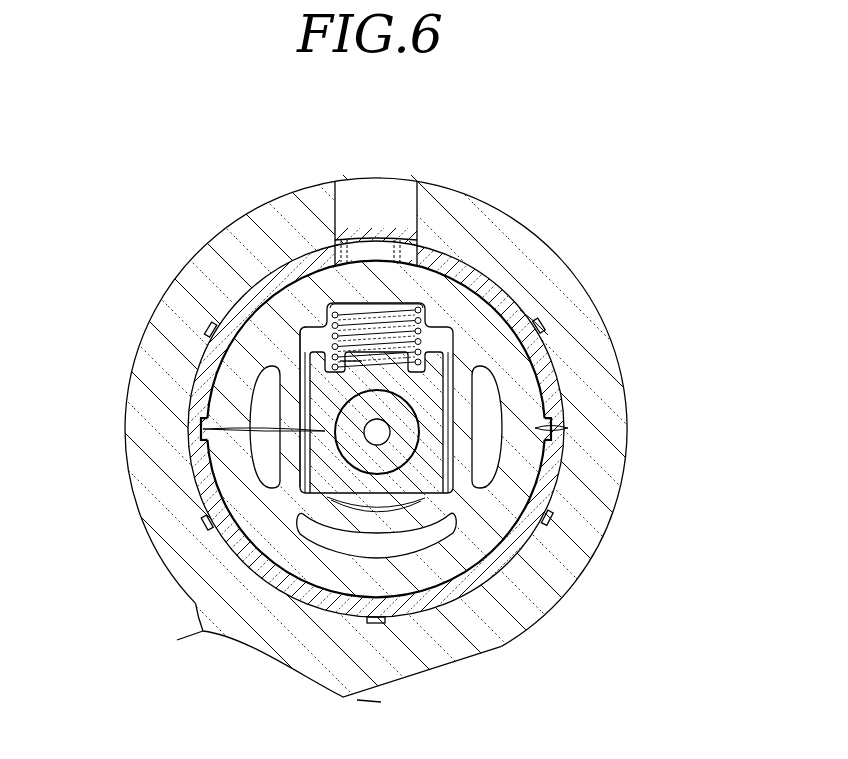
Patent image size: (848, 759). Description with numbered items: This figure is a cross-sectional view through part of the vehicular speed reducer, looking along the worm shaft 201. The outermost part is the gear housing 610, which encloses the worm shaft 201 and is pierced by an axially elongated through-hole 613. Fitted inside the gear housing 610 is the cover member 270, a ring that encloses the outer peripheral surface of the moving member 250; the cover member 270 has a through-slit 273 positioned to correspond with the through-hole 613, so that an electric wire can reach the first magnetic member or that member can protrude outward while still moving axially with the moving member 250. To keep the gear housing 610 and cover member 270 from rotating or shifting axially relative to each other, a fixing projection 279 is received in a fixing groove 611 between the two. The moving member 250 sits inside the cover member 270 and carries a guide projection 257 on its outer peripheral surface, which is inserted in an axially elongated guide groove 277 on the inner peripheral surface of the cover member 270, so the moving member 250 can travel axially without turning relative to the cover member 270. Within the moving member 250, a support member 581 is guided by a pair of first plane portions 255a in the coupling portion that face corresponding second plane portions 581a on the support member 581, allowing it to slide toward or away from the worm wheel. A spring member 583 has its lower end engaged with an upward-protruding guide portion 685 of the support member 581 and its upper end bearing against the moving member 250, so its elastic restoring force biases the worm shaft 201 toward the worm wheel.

The worm shaft 201 is at (360, 453).
The moving member 250 is at (547, 500).
The first plane portions 255a is at (200, 430).
The guide projection 257 is at (557, 428).
The cover member 270 is at (553, 378).
The through-slit 273 is at (338, 258).
The guide groove 277 is at (567, 425).
The fixing projection 279 is at (548, 332).
The support member 581 is at (323, 480).
The second plane portions 581a is at (303, 447).
The spring member 583 is at (350, 332).
The gear housing 610 is at (512, 258).
The fixing groove 611 is at (532, 330).
The through-hole 613 is at (413, 218).
The guide portion 685 is at (335, 340).